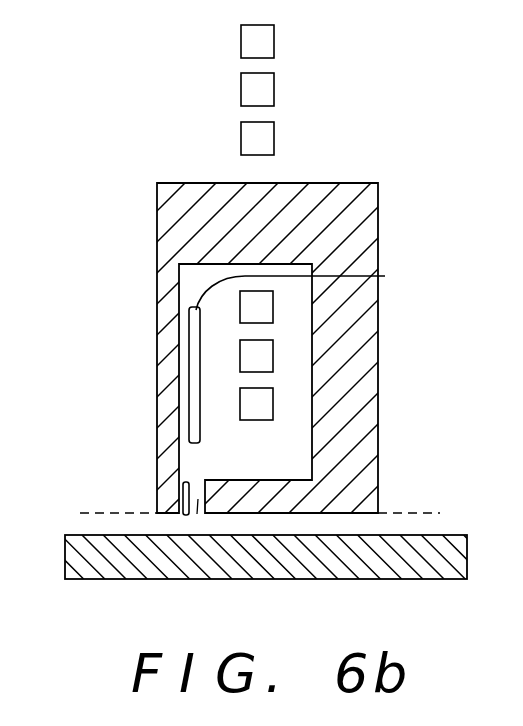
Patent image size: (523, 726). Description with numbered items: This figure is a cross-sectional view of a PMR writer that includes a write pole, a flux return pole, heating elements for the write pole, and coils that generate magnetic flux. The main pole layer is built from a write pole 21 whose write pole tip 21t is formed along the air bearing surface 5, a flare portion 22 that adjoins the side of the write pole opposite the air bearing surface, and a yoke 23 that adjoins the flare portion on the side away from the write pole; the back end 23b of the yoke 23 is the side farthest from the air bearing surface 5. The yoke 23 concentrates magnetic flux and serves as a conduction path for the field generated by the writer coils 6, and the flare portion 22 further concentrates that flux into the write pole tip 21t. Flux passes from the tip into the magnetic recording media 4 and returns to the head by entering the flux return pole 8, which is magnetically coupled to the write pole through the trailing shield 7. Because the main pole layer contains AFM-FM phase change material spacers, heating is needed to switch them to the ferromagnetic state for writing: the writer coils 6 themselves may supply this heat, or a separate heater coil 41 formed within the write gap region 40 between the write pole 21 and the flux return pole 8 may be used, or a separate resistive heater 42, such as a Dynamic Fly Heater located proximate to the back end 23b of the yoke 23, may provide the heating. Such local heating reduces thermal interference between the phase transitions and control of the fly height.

The magnetic recording media 4 is at (88, 553).
The air bearing surface 5 is at (261, 514).
The writer coils 6 is at (262, 40).
The trailing shield 7 is at (366, 208).
The flux return pole 8 is at (297, 494).
The write pole 21 is at (157, 498).
The write pole tip 21t is at (167, 514).
The flare portion 22 is at (152, 443).
The yoke 23 is at (146, 183).
The back end of the yoke 23b is at (185, 183).
The write gap region 40 is at (197, 514).
The heater coil 41 is at (187, 515).
The resistive heater 42 is at (385, 276).